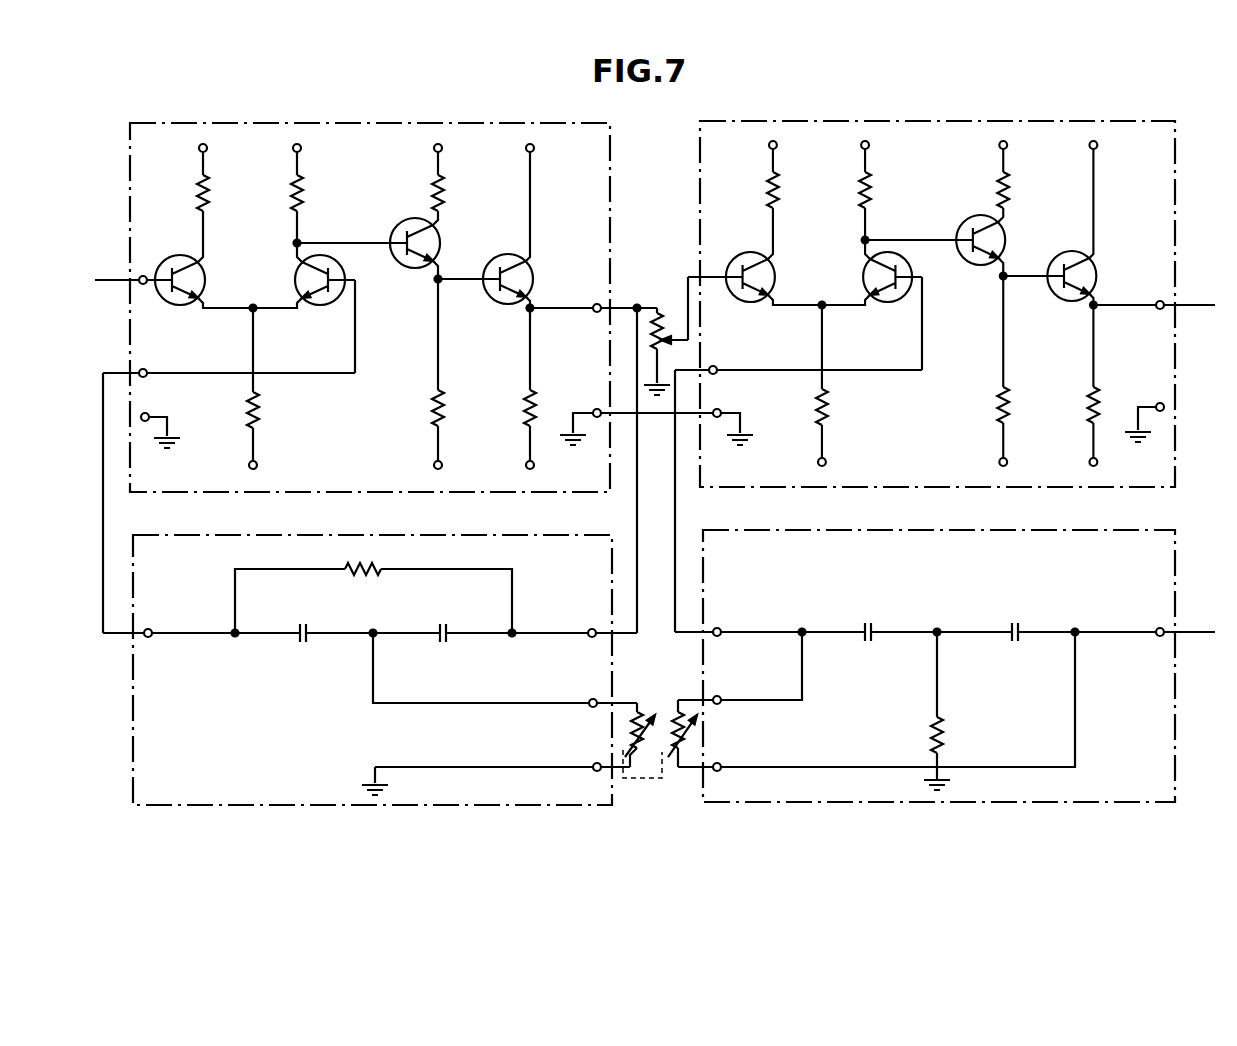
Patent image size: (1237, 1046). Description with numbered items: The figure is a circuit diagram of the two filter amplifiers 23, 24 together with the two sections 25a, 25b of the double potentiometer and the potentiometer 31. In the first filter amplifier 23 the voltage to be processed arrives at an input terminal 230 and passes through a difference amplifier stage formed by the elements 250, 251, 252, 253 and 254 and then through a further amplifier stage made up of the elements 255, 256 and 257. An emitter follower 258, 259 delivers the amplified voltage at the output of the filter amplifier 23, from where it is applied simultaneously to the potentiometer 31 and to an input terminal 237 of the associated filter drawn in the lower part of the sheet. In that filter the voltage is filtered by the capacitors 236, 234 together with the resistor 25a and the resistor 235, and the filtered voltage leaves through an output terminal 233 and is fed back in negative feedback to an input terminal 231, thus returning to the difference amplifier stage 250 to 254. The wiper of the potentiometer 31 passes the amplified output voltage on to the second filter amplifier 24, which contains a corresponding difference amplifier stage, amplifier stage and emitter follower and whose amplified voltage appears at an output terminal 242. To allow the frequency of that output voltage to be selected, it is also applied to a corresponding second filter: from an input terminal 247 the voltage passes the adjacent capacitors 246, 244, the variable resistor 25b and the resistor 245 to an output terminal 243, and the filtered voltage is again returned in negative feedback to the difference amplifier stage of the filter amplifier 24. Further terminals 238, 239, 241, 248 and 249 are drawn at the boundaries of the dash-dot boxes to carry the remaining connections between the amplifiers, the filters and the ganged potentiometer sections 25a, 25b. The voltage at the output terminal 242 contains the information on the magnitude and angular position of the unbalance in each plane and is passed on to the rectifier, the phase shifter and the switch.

The filter amplifier 23 is at (405, 495).
The filter amplifier 24 is at (972, 502).
The resistor 25a is at (627, 765).
The variable resistor 25b is at (682, 765).
The potentiometer 31 is at (657, 332).
The input terminal 230 is at (145, 286).
The input terminal 231 is at (165, 358).
The output terminal 233 is at (152, 638).
The capacitor 234 is at (303, 643).
The resistor 235 is at (347, 576).
The capacitor 236 is at (443, 643).
The input terminal 237 is at (590, 639).
The terminal 238 is at (591, 709).
The terminal 239 is at (593, 761).
The input terminal 241 is at (716, 367).
The output terminal 242 is at (1158, 311).
The output terminal 243 is at (722, 639).
The capacitor 244 is at (890, 650).
The resistor 245 is at (946, 734).
The capacitor 246 is at (1040, 652).
The input terminal 247 is at (1157, 639).
The terminal 248 is at (721, 697).
The terminal 249 is at (721, 763).
The difference amplifier stage 250 is at (206, 270).
The difference amplifier stage 251 is at (625, 271).
The difference amplifier stage 252 is at (206, 180).
The difference amplifier stage 253 is at (299, 190).
The difference amplifier stage 254 is at (259, 410).
The amplifier stage 255 is at (440, 244).
The amplifier stage 256 is at (442, 188).
The amplifier stage 257 is at (434, 410).
The emitter follower 258 is at (530, 276).
The emitter follower 259 is at (526, 410).